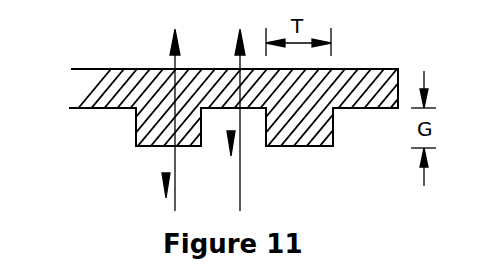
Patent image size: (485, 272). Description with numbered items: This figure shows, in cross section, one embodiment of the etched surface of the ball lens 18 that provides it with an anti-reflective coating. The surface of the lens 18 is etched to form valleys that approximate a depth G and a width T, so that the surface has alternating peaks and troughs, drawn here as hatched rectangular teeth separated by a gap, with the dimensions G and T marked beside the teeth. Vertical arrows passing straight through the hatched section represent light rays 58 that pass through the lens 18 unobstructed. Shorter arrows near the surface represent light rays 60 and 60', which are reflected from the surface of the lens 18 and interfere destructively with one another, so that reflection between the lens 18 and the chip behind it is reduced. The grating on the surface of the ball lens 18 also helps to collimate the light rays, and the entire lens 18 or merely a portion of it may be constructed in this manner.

The ball lens 18 is at (81, 84).
The light rays 58 is at (165, 53).
The light ray 60 is at (123, 180).
The light ray 60' is at (214, 168).